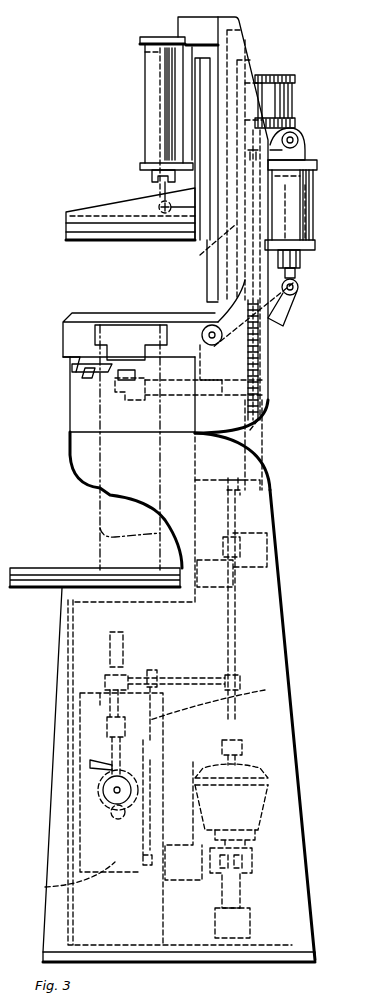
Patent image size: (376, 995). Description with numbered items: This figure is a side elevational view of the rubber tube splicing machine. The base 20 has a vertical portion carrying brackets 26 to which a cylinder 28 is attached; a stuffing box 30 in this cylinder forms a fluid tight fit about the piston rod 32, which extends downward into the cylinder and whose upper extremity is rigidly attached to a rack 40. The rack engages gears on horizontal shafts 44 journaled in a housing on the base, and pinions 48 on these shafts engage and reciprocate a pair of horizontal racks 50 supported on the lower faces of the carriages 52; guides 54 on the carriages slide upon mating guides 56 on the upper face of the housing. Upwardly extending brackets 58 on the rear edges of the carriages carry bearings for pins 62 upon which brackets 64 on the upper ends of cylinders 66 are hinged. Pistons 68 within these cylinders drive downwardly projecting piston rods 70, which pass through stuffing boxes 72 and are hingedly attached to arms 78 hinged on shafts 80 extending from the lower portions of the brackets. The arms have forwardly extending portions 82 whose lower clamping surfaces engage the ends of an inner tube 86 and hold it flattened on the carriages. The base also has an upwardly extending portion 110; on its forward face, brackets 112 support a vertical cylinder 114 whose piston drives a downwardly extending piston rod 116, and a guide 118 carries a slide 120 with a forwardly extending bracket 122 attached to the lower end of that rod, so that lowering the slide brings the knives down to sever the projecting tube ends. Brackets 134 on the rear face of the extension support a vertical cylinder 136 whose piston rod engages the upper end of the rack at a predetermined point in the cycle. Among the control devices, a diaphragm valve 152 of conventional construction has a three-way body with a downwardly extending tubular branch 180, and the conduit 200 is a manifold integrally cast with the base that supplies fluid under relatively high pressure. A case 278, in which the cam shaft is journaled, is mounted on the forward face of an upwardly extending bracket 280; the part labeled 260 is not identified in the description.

The upwardly extending portion 110 is at (222, 38).
The brackets 112 is at (160, 37).
The vertical cylinder 114 is at (152, 100).
The piston rod 116 is at (165, 191).
The guide 118 is at (207, 270).
The slide 120 is at (200, 137).
The bracket 122 is at (67, 212).
The brackets 134 is at (280, 75).
The vertical cylinder 136 is at (293, 95).
The pins 62 is at (296, 135).
The brackets 64 is at (300, 153).
The cylinders 66 is at (311, 206).
The pistons 68 is at (310, 178).
The stuffing boxes 72 is at (300, 262).
The piston rods 70 is at (296, 277).
The arms 78 is at (278, 316).
The shafts 80 is at (210, 325).
The forwardly extending portions 82 is at (122, 314).
The brackets 58 is at (208, 243).
The guides 56 is at (110, 372).
The carriages 52 is at (76, 362).
The guides 54 is at (92, 372).
The horizontal racks 50 is at (120, 375).
The pinions 48 is at (134, 400).
The horizontal shafts 44 is at (262, 356).
The rack 40 is at (271, 404).
The piston rod 32 is at (267, 460).
The stuffing box 30 is at (270, 484).
The cylinder 28 is at (272, 532).
The brackets 26 is at (220, 498).
The inner tube 86 is at (108, 523).
The base 20 is at (290, 702).
The bracket 280 is at (280, 676).
The diaphragm valve 152 is at (250, 820).
The tubular branch 180 is at (252, 882).
The conduit 200 is at (250, 920).
The gear 260 is at (115, 790).
The case 278 is at (52, 887).